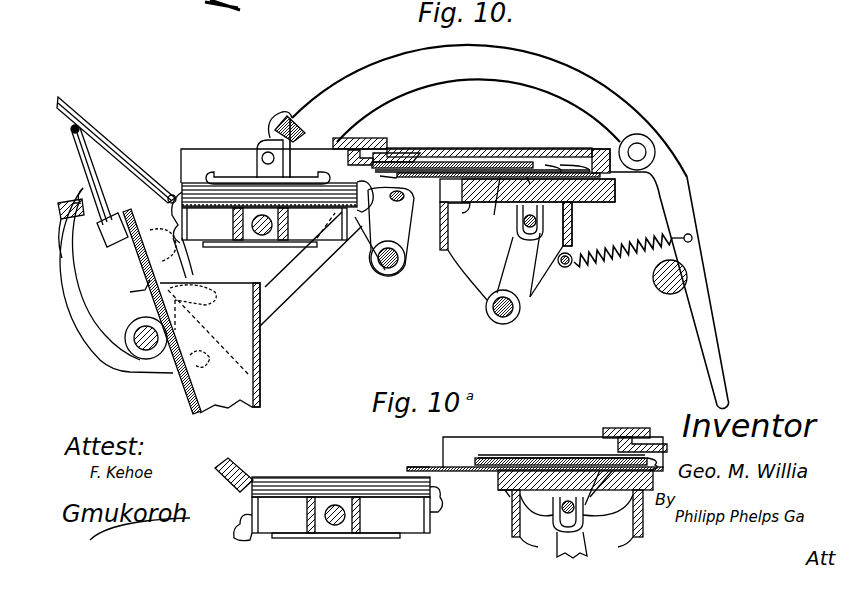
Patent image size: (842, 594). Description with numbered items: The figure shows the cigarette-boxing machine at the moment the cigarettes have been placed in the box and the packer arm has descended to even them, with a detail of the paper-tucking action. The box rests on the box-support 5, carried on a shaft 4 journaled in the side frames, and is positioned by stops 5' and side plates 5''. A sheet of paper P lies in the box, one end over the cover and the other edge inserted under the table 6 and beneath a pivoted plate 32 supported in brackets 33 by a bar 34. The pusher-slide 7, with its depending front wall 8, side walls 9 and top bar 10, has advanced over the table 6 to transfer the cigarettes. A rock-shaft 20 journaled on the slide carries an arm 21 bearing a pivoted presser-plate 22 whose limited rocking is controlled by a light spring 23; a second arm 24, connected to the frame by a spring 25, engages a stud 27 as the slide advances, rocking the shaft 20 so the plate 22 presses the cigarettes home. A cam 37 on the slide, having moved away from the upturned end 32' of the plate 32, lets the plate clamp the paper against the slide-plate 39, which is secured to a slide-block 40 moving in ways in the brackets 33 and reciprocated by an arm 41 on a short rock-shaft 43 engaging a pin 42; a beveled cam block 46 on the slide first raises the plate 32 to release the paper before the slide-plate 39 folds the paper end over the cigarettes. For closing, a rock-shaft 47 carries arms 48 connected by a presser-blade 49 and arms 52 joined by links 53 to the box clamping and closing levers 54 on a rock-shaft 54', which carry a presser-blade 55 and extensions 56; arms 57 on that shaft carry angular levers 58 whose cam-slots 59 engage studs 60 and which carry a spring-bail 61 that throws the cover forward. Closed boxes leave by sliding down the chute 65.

In FIG. 10, the arm 21 is at (488, 111).
In FIG. 10, the arm 24 is at (708, 282).
In FIG. 10, the rock-shaft 20 is at (641, 150).
In FIG. 10, the side walls 9 is at (188, 149).
In FIG. 10A, the side walls 9 is at (516, 437).
In FIG. 10, the presser-plate 22 is at (210, 172).
In FIG. 10, the spring 23 is at (268, 132).
In FIG. 10, the top bar 10 is at (372, 138).
In FIG. 10A, the top bar 10 is at (634, 430).
In FIG. 10, the front wall 8 is at (348, 153).
In FIG. 10A, the front wall 8 is at (618, 440).
In FIG. 10, the pusher-slide 7 is at (480, 148).
In FIG. 10, the cam 37 is at (408, 153).
In FIG. 10A, the cam 37 is at (662, 438).
In FIG. 10, the table 6 is at (497, 172).
In FIG. 10A, the table 6 is at (482, 458).
In FIG. 10, the pivoted plate 32 is at (498, 187).
In FIG. 10A, the pivoted plate 32 is at (535, 481).
In FIG. 10, the upturned end 32' is at (588, 148).
In FIG. 10, the slide-plate 39 is at (414, 178).
In FIG. 10A, the slide-plate 39 is at (418, 458).
In FIG. 10, the slide-block 40 is at (617, 184).
In FIG. 10A, the slide-block 40 is at (505, 495).
In FIG. 10, the cam block 46 is at (462, 210).
In FIG. 10A, the cam block 46 is at (503, 492).
In FIG. 10, the bar 34 is at (496, 215).
In FIG. 10A, the bar 34 is at (607, 500).
In FIG. 10, the brackets 33 is at (506, 251).
In FIG. 10A, the brackets 33 is at (577, 518).
In FIG. 10, the pin 42 is at (572, 220).
In FIG. 10A, the pin 42 is at (553, 514).
In FIG. 10, the arm 41 is at (518, 265).
In FIG. 10A, the arm 41 is at (572, 545).
In FIG. 10, the rock-shaft 43 is at (515, 309).
In FIG. 10, the spring 25 is at (600, 264).
In FIG. 10, the stud 27 is at (660, 290).
In FIG. 10, the box-support 5 is at (269, 211).
In FIG. 10A, the box-support 5 is at (341, 505).
In FIG. 10, the side plates 5'' is at (260, 240).
In FIG. 10A, the side plates 5'' is at (336, 530).
In FIG. 10, the shaft 4 is at (263, 236).
In FIG. 10A, the shaft 4 is at (345, 535).
In FIG. 10, the stops 5' is at (275, 205).
In FIG. 10A, the stops 5' is at (344, 520).
In FIG. 10, the sheet of paper P is at (158, 165).
In FIG. 10A, the sheet of paper P is at (248, 470).
In FIG. 10, the spring-bail 61 is at (74, 136).
In FIG. 10, the angular levers 58 is at (147, 217).
In FIG. 10, the box clamping and closing levers 54 is at (116, 280).
In FIG. 10, the rock-shaft 54' is at (144, 347).
In FIG. 10, the extensions 56 is at (80, 190).
In FIG. 10, the presser-blade 55 is at (72, 218).
In FIG. 10, the studs 60 is at (150, 262).
In FIG. 10, the arms 57 is at (142, 290).
In FIG. 10, the cam-slot 59 is at (190, 272).
In FIG. 10, the chute 65 is at (225, 400).
In FIG. 10, the links 53 is at (310, 269).
In FIG. 10, the arms 52 is at (368, 238).
In FIG. 10, the arms 48 is at (401, 241).
In FIG. 10, the presser-blade 49 is at (392, 202).
In FIG. 10, the rock-shaft 47 is at (392, 268).